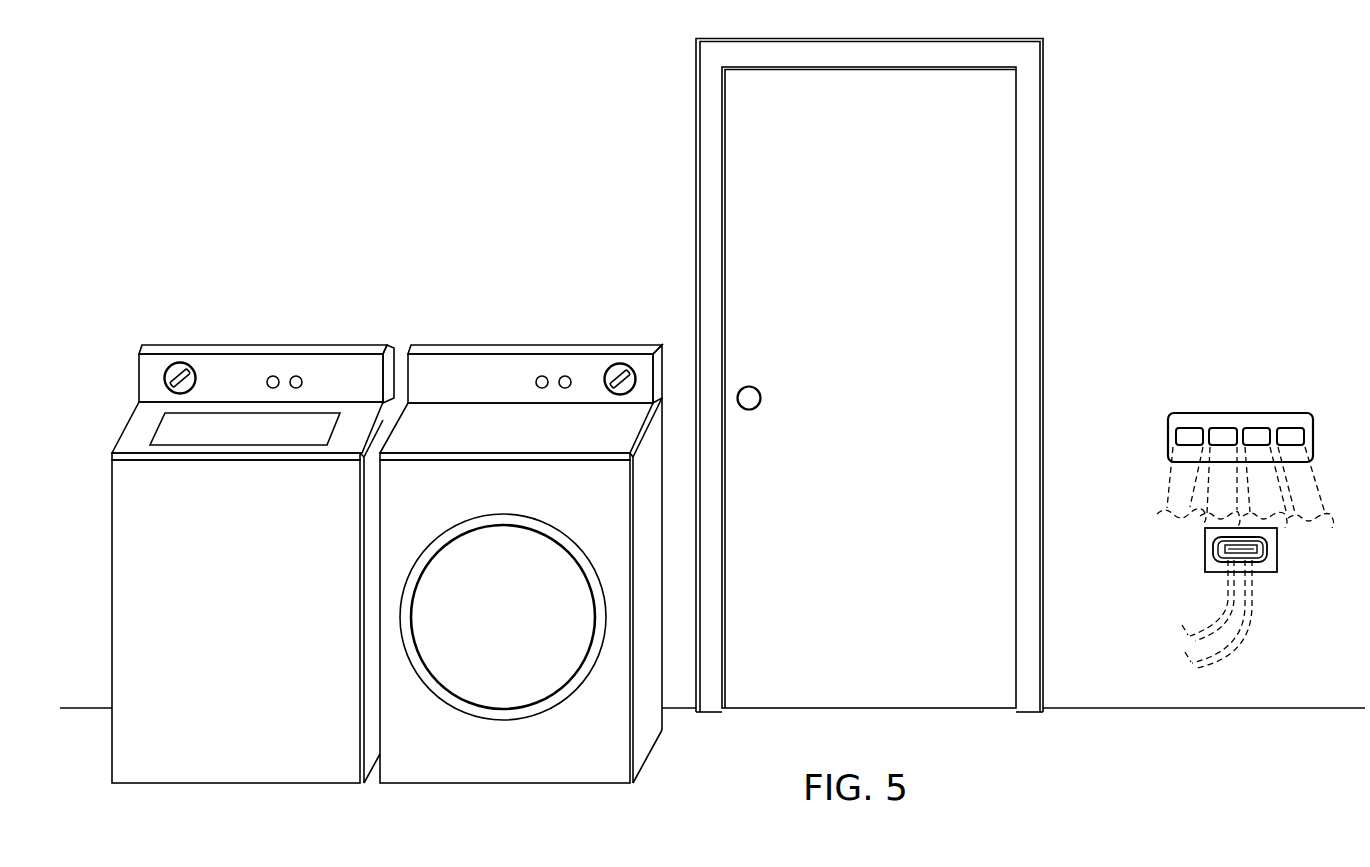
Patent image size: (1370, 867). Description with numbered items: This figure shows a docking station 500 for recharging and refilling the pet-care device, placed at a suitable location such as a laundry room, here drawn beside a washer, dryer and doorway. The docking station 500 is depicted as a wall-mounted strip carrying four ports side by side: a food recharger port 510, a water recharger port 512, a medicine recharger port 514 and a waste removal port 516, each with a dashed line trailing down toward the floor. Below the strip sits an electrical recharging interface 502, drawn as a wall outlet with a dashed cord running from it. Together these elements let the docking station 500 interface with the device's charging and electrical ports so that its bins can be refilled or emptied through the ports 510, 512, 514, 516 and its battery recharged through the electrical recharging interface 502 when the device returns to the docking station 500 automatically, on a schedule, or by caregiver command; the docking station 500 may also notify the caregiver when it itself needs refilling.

The docking station 500 is at (1202, 429).
The electrical recharging interface 502 is at (1277, 550).
The food recharger port 510 is at (1190, 428).
The water recharger port 512 is at (1220, 428).
The medicine recharger port 514 is at (1258, 428).
The waste removal port 516 is at (1292, 428).